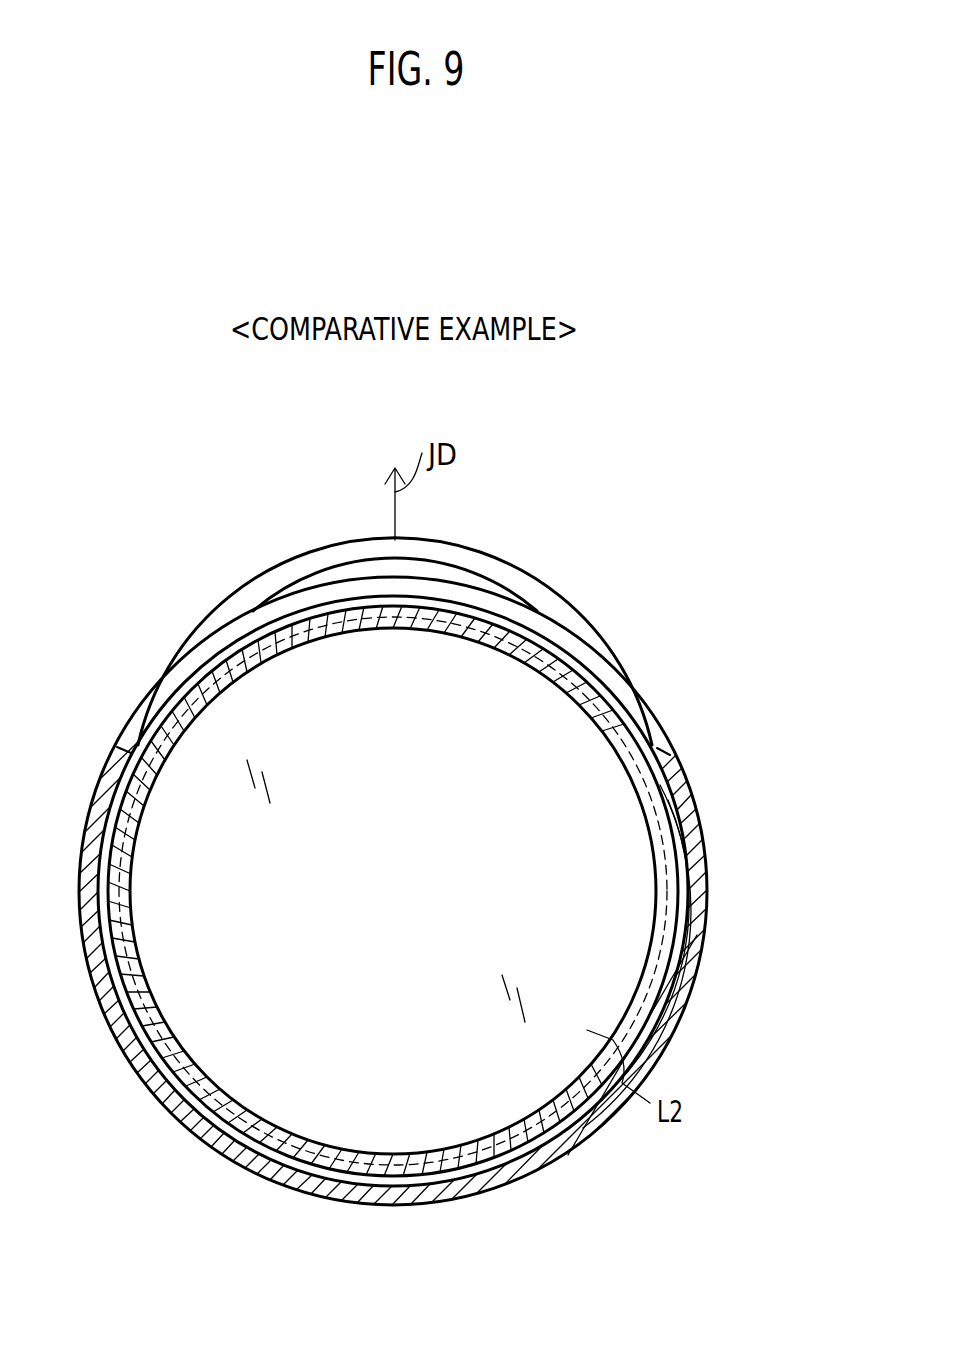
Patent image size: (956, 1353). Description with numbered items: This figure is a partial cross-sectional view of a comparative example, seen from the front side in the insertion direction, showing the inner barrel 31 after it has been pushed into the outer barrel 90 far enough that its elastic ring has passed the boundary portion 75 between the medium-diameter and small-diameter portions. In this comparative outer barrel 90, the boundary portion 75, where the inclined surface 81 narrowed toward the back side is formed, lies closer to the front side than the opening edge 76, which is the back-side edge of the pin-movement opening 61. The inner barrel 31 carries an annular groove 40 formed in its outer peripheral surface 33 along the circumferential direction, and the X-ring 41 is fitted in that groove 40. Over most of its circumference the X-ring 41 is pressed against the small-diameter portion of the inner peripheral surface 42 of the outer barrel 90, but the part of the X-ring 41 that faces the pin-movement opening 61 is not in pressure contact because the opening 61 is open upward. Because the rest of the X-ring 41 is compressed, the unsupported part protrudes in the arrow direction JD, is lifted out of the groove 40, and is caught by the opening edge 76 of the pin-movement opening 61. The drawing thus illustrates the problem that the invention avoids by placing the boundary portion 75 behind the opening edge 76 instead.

The inner barrel 31 is at (683, 888).
The outer peripheral surface 33 is at (313, 1170).
The groove 40 is at (680, 820).
The X-ring 41 is at (453, 557).
The inner peripheral surface 42 is at (222, 1120).
The pin-movement opening 61 is at (138, 714).
The boundary portion 75 is at (688, 956).
The opening edge 76 is at (652, 722).
The inclined surface 81 is at (665, 997).
The outer barrel 90 is at (492, 1188).